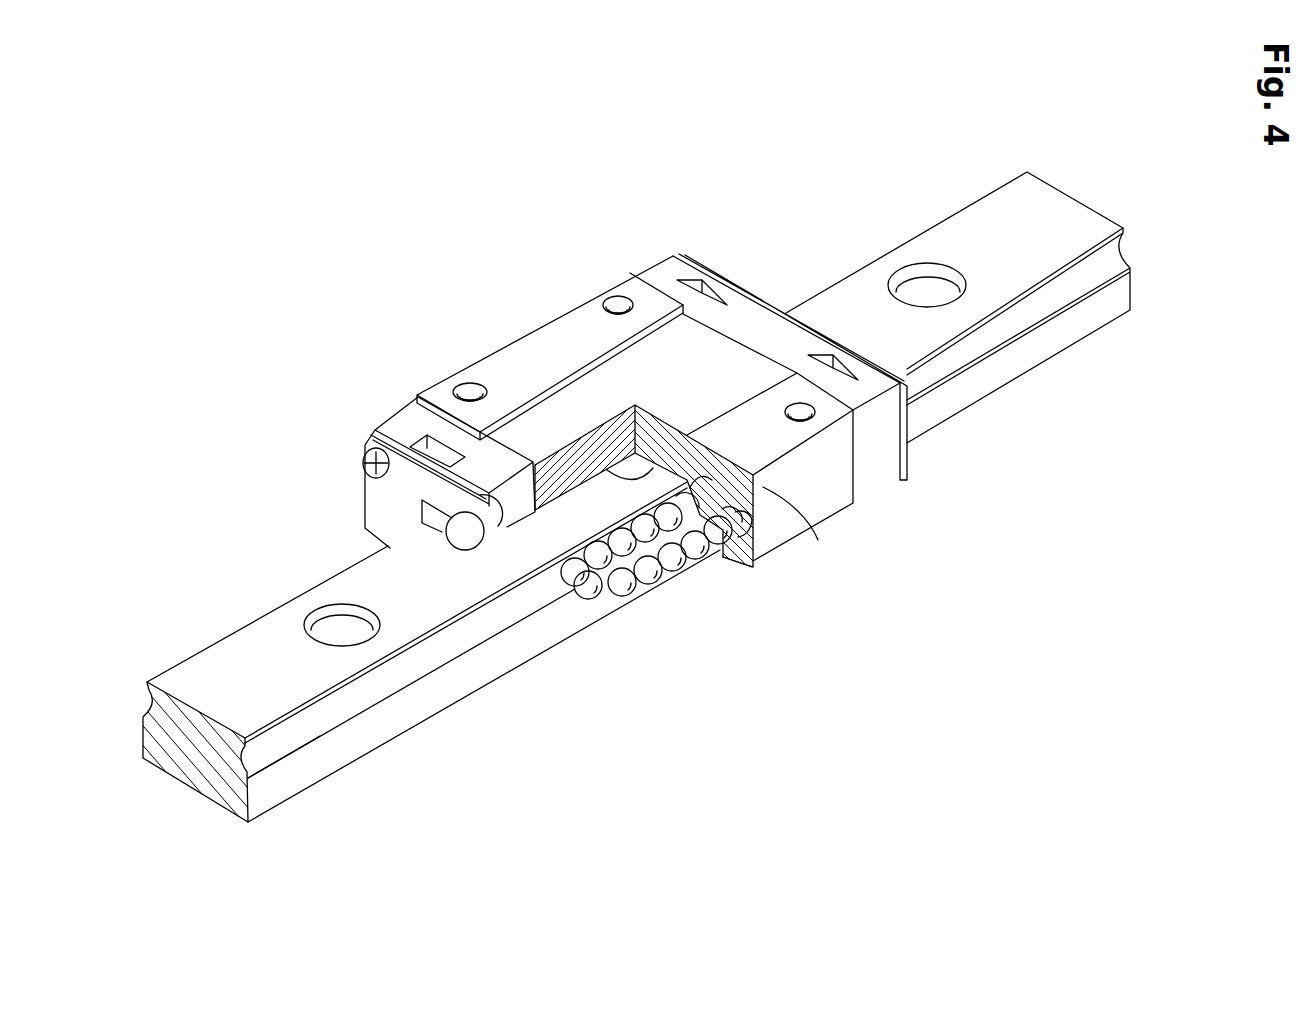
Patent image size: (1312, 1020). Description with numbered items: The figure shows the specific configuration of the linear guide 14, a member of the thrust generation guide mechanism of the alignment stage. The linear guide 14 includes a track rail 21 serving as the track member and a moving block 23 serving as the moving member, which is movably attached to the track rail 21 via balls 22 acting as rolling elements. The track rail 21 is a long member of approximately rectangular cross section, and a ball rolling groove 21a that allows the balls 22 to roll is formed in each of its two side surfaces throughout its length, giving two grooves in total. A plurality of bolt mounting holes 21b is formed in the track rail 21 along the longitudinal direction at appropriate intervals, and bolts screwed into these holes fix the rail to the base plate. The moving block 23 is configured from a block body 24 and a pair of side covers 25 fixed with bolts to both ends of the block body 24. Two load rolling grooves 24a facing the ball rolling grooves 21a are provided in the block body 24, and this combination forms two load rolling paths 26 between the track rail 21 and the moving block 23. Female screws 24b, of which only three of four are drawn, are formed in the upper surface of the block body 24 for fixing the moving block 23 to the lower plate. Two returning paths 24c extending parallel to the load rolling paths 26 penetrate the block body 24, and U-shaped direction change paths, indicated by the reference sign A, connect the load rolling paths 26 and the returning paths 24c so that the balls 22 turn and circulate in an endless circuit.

The linear guide 14 is at (171, 137).
The track rail 21 is at (235, 661).
The ball rolling groove 21a is at (340, 707).
The bolt mounting hole 21b is at (927, 285).
The balls 22 is at (663, 582).
The moving block 23 is at (563, 305).
The block body 24 is at (533, 356).
The load rolling groove 24a is at (748, 508).
The female screw 24b is at (470, 392).
The returning path 24c is at (733, 560).
The side cover 25 is at (388, 415).
The load rolling path 26 is at (692, 485).
The direction change path A is at (592, 612).